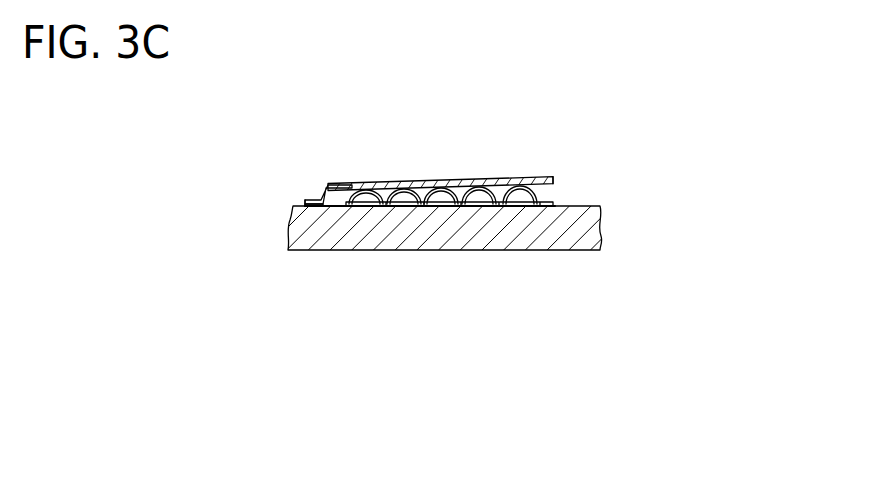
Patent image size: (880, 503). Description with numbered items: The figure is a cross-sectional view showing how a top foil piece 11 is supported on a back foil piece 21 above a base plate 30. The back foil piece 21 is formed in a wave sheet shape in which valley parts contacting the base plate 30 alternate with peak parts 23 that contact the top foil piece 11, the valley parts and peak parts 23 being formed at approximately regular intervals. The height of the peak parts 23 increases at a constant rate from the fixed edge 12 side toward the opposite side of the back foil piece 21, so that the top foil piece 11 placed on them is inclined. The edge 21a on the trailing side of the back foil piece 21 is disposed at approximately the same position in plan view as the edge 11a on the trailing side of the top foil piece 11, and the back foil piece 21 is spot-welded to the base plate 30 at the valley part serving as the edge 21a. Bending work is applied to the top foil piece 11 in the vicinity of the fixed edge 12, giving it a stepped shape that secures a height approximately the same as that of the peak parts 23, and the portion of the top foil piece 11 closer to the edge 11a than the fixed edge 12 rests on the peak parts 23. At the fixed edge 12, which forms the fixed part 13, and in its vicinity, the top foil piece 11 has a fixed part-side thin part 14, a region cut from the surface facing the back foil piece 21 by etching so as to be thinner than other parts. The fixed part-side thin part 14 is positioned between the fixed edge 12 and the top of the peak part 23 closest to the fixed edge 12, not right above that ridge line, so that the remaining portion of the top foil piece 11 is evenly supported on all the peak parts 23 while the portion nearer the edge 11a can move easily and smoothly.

The base plate 30 is at (575, 230).
The back foil piece 21 is at (517, 198).
The edge of the back foil piece 21a is at (553, 200).
The peak part 23 is at (367, 192).
The top foil piece 11 is at (497, 177).
The edge of the top foil piece 11a is at (555, 178).
The fixed edge 12 is at (316, 199).
The fixed part-side thin part 14 is at (332, 201).
The fixed part 13 is at (291, 185).